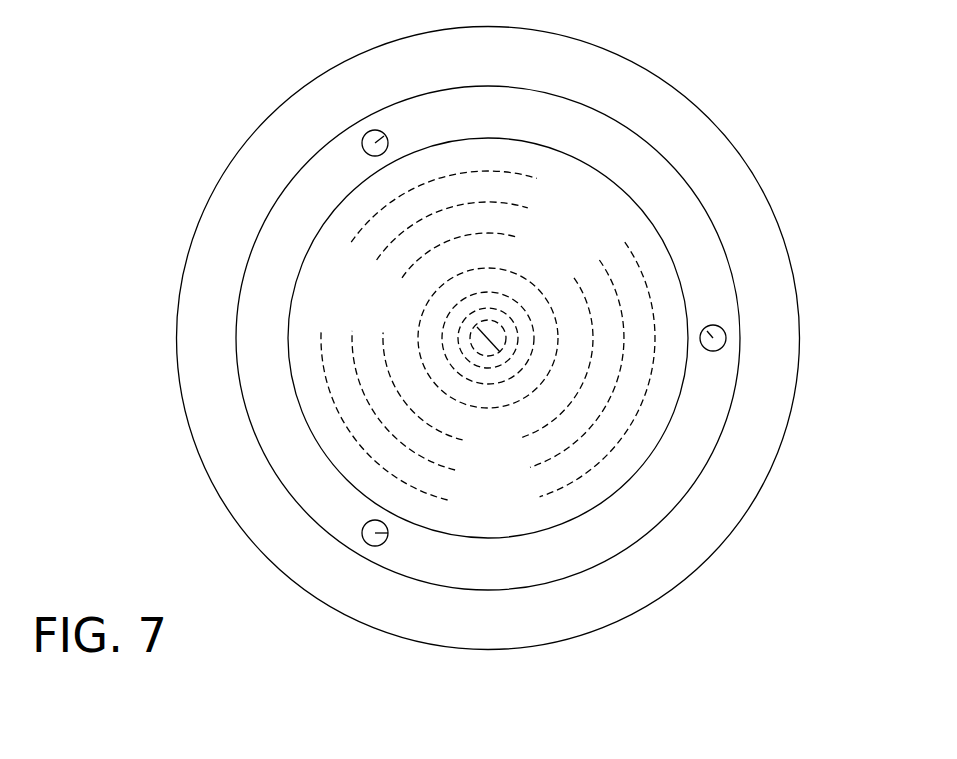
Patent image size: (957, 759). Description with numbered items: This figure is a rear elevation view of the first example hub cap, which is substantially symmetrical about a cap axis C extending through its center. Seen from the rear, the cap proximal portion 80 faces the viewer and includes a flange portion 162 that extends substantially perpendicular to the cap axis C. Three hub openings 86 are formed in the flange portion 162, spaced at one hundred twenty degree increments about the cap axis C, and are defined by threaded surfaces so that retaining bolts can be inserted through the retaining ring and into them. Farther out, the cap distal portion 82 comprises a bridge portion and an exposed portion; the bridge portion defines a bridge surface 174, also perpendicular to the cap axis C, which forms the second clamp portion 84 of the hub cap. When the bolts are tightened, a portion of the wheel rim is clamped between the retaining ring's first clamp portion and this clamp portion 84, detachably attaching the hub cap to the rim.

The cap proximal portion 80 is at (740, 310).
The cap distal portion 82 is at (806, 184).
The clamp portion 84 is at (637, 98).
The hub openings 86 is at (388, 140).
The flange portion 162 is at (665, 187).
The bridge surface 174 is at (775, 397).
The cap axis C is at (478, 350).